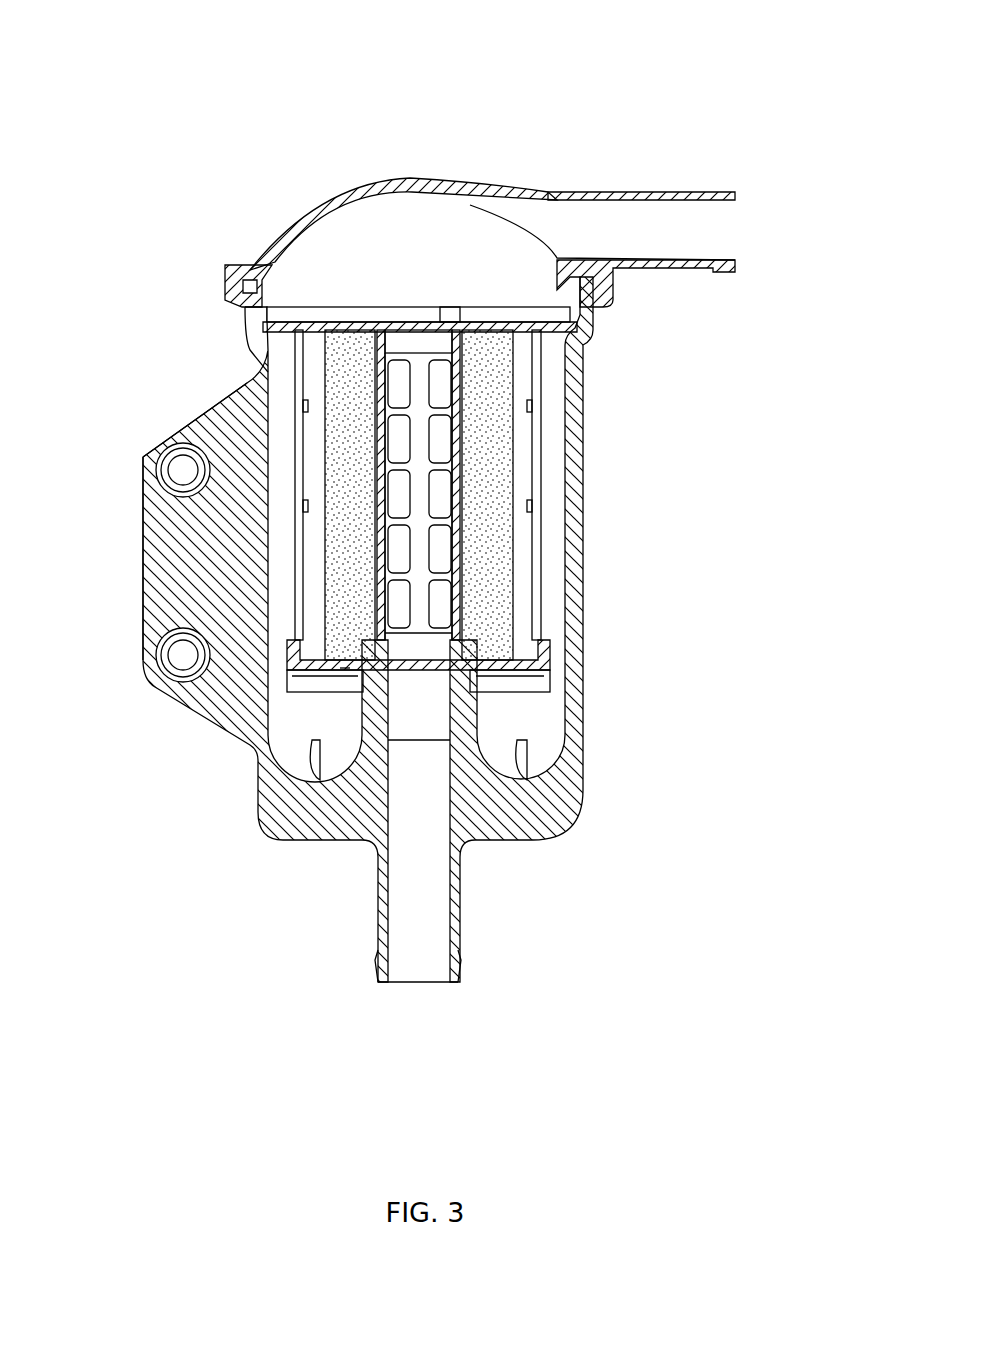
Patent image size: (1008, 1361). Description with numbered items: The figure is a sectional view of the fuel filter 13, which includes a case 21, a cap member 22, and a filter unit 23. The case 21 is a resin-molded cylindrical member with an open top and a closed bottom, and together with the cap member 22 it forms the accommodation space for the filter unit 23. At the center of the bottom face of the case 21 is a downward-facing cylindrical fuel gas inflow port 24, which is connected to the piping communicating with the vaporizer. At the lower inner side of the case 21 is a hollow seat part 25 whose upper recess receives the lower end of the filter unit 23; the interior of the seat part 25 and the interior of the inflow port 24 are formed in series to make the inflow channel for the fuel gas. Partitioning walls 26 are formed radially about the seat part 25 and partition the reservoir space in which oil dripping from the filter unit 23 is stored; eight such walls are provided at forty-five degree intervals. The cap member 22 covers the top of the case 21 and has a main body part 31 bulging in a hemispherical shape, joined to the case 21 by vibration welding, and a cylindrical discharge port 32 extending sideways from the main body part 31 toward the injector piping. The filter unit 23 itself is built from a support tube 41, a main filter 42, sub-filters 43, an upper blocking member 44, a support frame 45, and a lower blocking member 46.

The fuel filter 13 is at (410, 125).
The case 21 is at (582, 546).
The cap member 22 is at (300, 205).
The filter unit 23 is at (458, 300).
The fuel gas inflow port 24 is at (460, 905).
The seat part 25 is at (480, 717).
The partitioning walls 26 is at (320, 752).
The main body part 31 is at (327, 180).
The discharge port 32 is at (592, 190).
The support tube 41 is at (418, 365).
The main filter 42 is at (340, 368).
The sub-filters 43 is at (295, 593).
The upper blocking member 44 is at (320, 320).
The support frame 45 is at (300, 445).
The lower blocking member 46 is at (345, 672).